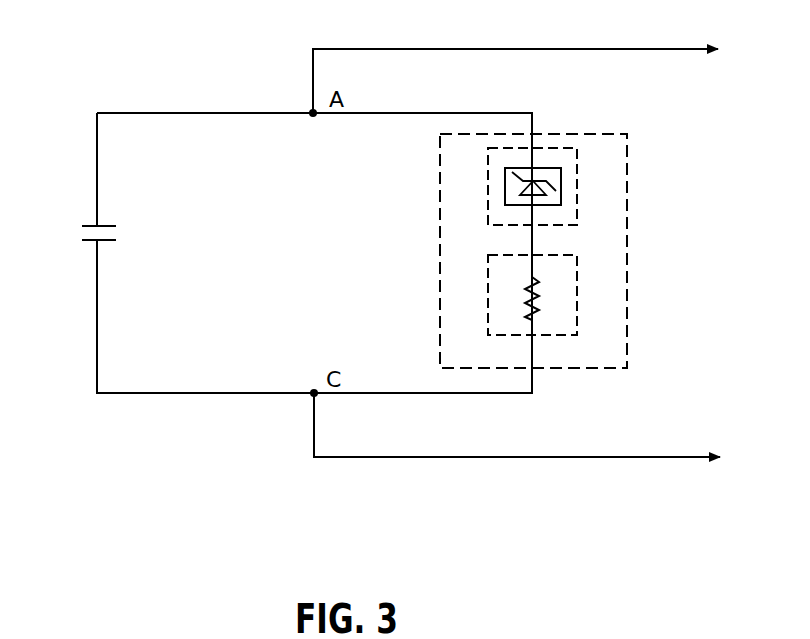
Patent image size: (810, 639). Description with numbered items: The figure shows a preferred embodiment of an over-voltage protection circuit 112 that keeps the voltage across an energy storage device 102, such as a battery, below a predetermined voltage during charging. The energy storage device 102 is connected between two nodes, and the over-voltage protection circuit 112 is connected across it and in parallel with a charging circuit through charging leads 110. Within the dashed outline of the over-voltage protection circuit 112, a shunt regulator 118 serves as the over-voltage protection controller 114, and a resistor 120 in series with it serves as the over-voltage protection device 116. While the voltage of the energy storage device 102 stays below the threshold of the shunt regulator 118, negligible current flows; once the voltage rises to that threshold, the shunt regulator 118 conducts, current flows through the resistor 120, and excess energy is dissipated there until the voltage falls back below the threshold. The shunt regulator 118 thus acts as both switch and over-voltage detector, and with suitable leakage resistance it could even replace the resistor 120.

The energy storage device 102 is at (65, 230).
The charging leads 110 is at (551, 253).
The over-voltage protection circuit 112 is at (630, 176).
The over-voltage protection controller 114 is at (486, 188).
The over-voltage protection device 116 is at (486, 298).
The shunt regulator 118 is at (558, 167).
The resistor 120 is at (539, 291).